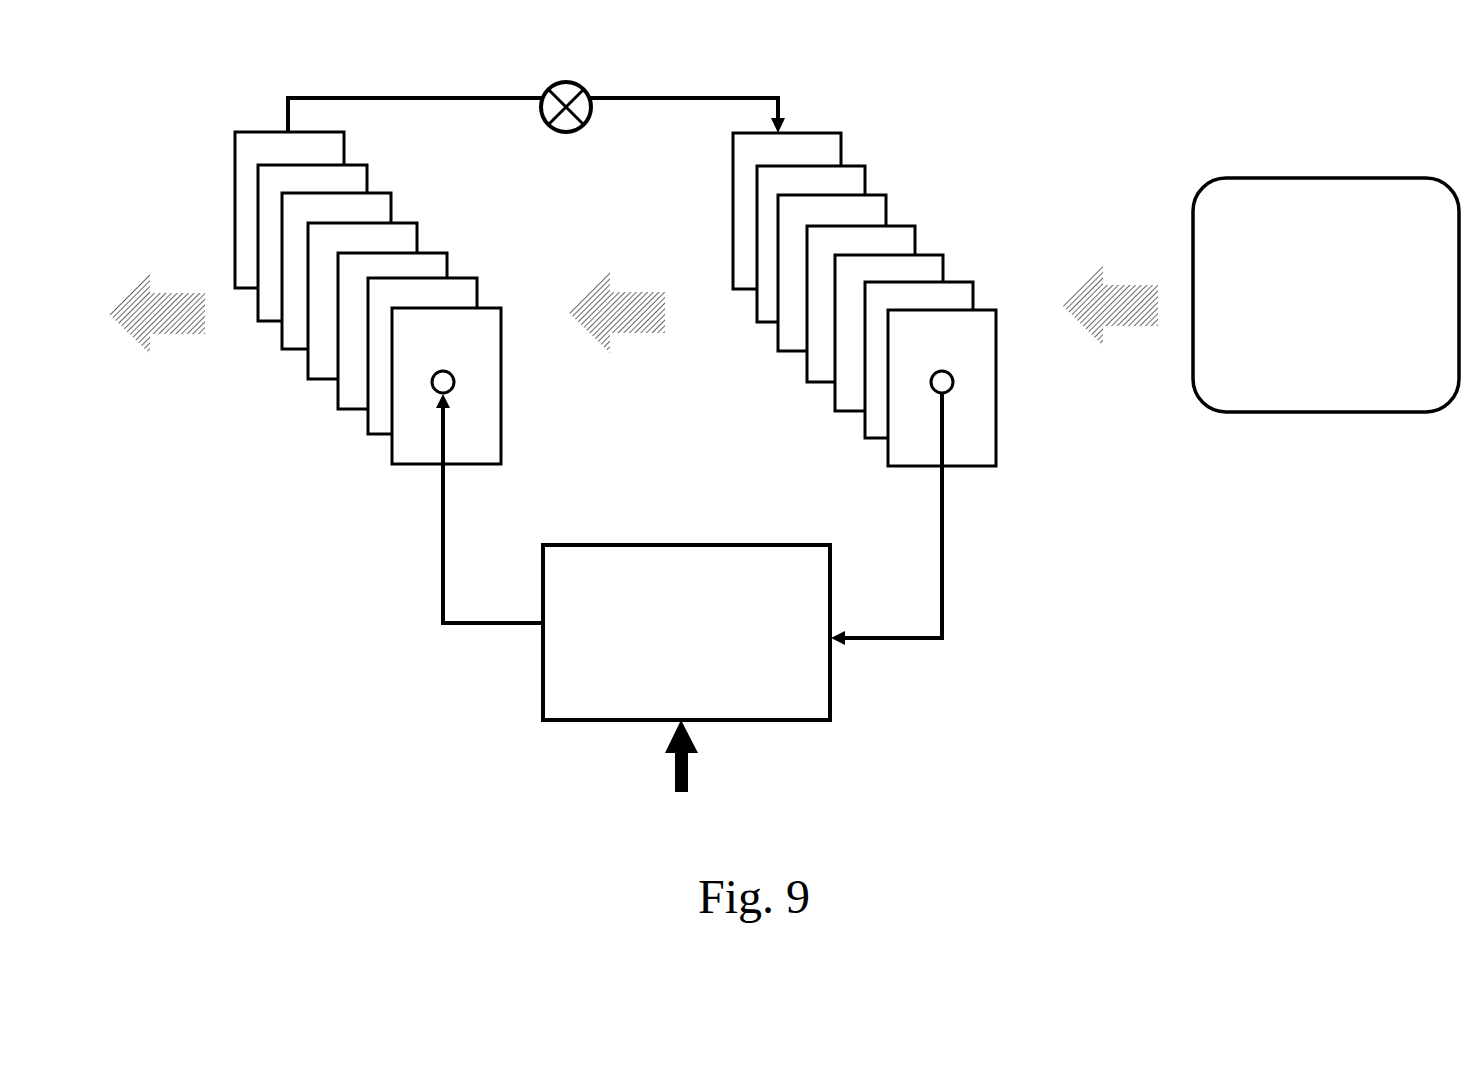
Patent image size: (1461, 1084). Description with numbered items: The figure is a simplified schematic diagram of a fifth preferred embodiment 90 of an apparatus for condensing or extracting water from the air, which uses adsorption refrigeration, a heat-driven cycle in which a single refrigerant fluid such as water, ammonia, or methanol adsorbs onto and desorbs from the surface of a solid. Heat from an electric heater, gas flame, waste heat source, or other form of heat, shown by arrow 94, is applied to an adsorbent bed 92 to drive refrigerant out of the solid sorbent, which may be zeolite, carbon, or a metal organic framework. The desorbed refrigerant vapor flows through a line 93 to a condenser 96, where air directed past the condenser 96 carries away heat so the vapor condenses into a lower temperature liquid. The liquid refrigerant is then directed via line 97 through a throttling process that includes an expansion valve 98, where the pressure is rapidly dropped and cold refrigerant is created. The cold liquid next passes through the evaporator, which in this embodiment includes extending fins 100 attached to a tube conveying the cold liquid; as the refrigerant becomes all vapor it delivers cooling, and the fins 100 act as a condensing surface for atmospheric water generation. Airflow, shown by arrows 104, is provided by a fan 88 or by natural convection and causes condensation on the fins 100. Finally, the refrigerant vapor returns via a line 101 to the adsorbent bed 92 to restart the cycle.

The fan 88 is at (1292, 377).
The fifth preferred embodiment 90 is at (428, 703).
The adsorbent bed 92 is at (685, 543).
The line 93 is at (438, 533).
The arrow 94 is at (688, 773).
The condenser 96 is at (247, 262).
The line 97 is at (393, 95).
The expansion valve 98 is at (560, 135).
The extending fins 100 is at (975, 427).
The line 101 is at (938, 600).
The arrows 104 is at (160, 330).